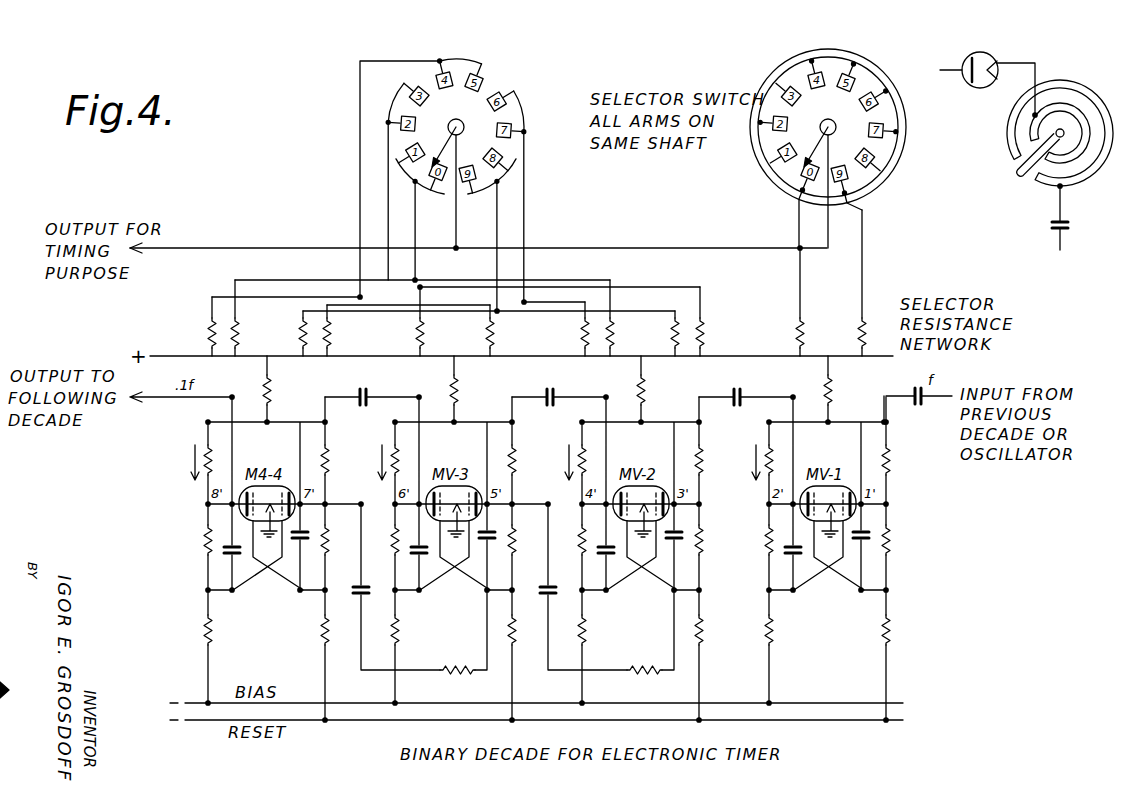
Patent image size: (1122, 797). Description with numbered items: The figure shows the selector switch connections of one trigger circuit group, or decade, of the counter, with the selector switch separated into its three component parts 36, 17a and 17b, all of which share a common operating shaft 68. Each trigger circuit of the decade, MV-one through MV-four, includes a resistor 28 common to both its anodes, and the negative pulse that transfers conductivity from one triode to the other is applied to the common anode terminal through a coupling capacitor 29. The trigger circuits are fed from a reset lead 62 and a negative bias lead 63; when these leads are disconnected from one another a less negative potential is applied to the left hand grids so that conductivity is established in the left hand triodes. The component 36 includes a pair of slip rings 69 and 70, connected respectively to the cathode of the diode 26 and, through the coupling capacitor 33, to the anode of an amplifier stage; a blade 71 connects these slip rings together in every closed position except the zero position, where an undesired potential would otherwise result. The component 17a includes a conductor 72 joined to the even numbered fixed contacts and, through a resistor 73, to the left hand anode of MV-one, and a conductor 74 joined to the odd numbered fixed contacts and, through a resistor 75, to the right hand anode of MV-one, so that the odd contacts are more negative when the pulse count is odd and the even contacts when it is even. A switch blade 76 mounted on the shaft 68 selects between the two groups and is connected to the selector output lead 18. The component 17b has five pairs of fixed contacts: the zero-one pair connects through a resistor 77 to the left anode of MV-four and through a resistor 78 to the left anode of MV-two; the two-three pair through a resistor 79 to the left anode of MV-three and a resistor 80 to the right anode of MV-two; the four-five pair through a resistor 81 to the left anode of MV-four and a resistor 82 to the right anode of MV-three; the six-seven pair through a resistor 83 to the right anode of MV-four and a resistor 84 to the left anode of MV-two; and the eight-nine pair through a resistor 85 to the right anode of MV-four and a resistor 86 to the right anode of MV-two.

The selector switch component 17a is at (826, 139).
The selector switch component 17b is at (470, 52).
The selector output lead 18 is at (248, 247).
The diode 26 is at (987, 53).
The resistor 28 is at (836, 398).
The coupling capacitor 29 is at (740, 393).
The coupling capacitor 33 is at (1048, 228).
The selector switch component 36 is at (1043, 123).
The reset lead 62 is at (434, 732).
The negative bias lead 63 is at (362, 703).
The common operating shaft 68 is at (841, 119).
The slip ring 69 is at (1027, 143).
The slip ring 70 is at (1007, 131).
The blade 71 is at (1020, 176).
The conductor 72 is at (776, 183).
The resistor 73 is at (793, 342).
The conductor 74 is at (882, 180).
The resistor 75 is at (861, 341).
The switch blade 76 is at (812, 165).
The resistor 77 is at (241, 345).
The resistor 78 is at (615, 340).
The resistor 79 is at (412, 344).
The resistor 80 is at (704, 332).
The resistor 81 is at (204, 338).
The resistor 82 is at (494, 331).
The resistor 83 is at (335, 344).
The resistor 84 is at (578, 344).
The resistor 85 is at (295, 347).
The resistor 86 is at (673, 344).